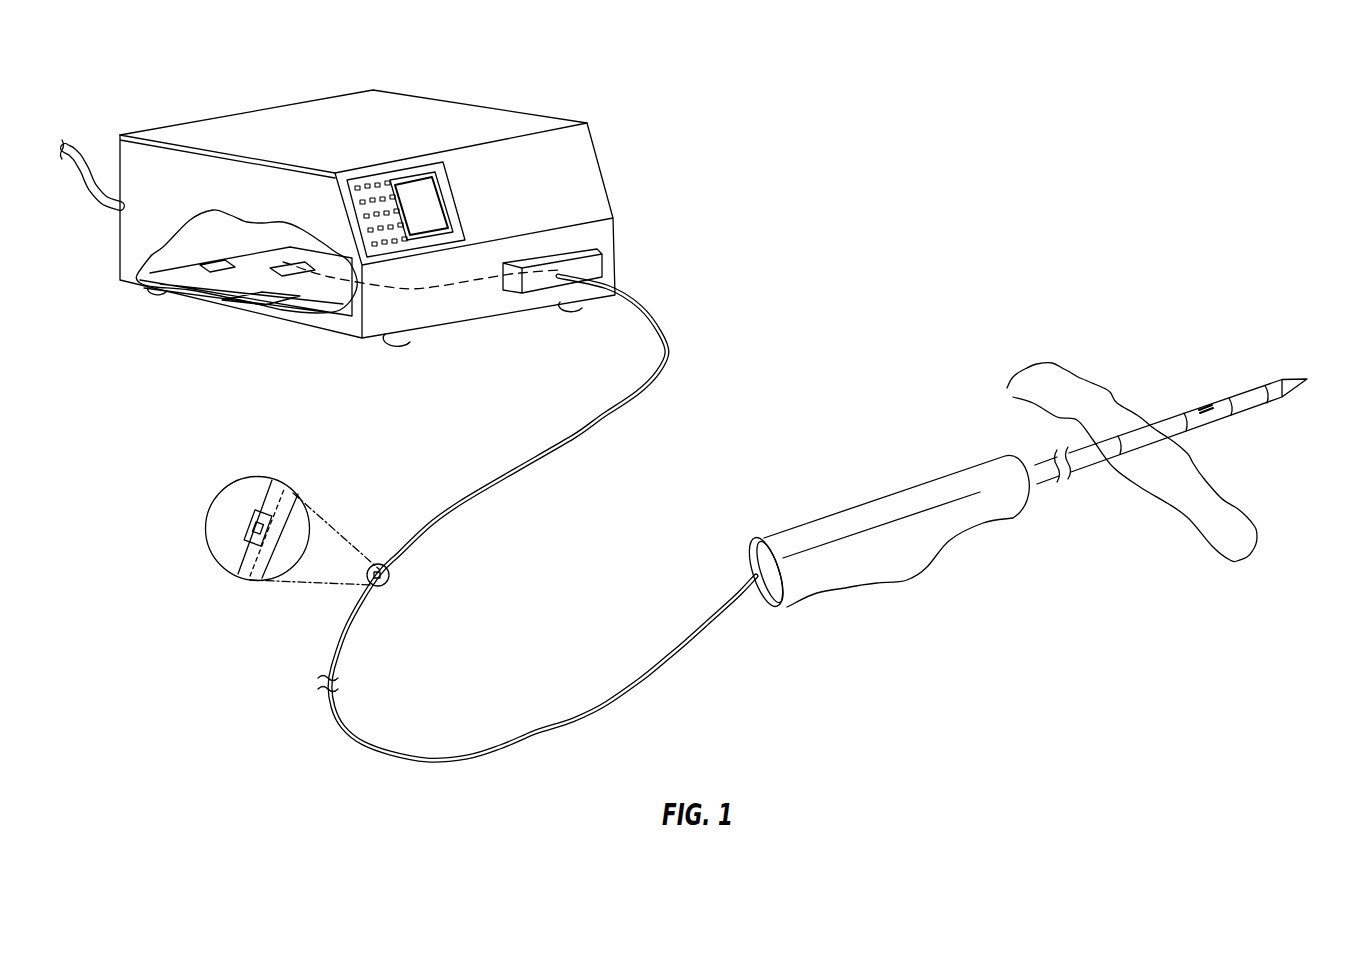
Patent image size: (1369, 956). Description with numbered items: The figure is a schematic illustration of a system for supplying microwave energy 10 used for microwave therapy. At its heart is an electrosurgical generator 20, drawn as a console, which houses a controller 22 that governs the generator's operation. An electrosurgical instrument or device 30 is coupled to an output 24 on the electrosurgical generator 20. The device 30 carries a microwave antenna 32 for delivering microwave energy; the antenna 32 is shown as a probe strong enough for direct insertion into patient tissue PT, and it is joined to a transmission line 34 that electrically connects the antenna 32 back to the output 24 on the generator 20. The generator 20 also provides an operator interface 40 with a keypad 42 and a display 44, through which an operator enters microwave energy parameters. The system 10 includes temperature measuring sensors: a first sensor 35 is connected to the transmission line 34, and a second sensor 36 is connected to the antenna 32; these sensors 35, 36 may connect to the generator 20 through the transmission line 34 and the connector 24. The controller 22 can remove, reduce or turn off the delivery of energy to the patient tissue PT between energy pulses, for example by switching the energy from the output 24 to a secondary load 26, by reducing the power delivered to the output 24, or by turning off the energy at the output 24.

The system for supplying microwave energy 10 is at (938, 150).
The electrosurgical generator 20 is at (250, 102).
The controller 22 is at (258, 240).
The output 24 is at (597, 263).
The secondary load 26 is at (226, 300).
The electrosurgical instrument or device 30 is at (855, 493).
The microwave antenna 32 is at (1295, 374).
The transmission line 34 is at (433, 522).
The first sensor 35 is at (243, 522).
The second sensor 36 is at (1205, 405).
The operator interface 40 is at (403, 270).
The keypad 42 is at (362, 183).
The display 44 is at (415, 192).
The patient tissue PT is at (1052, 380).